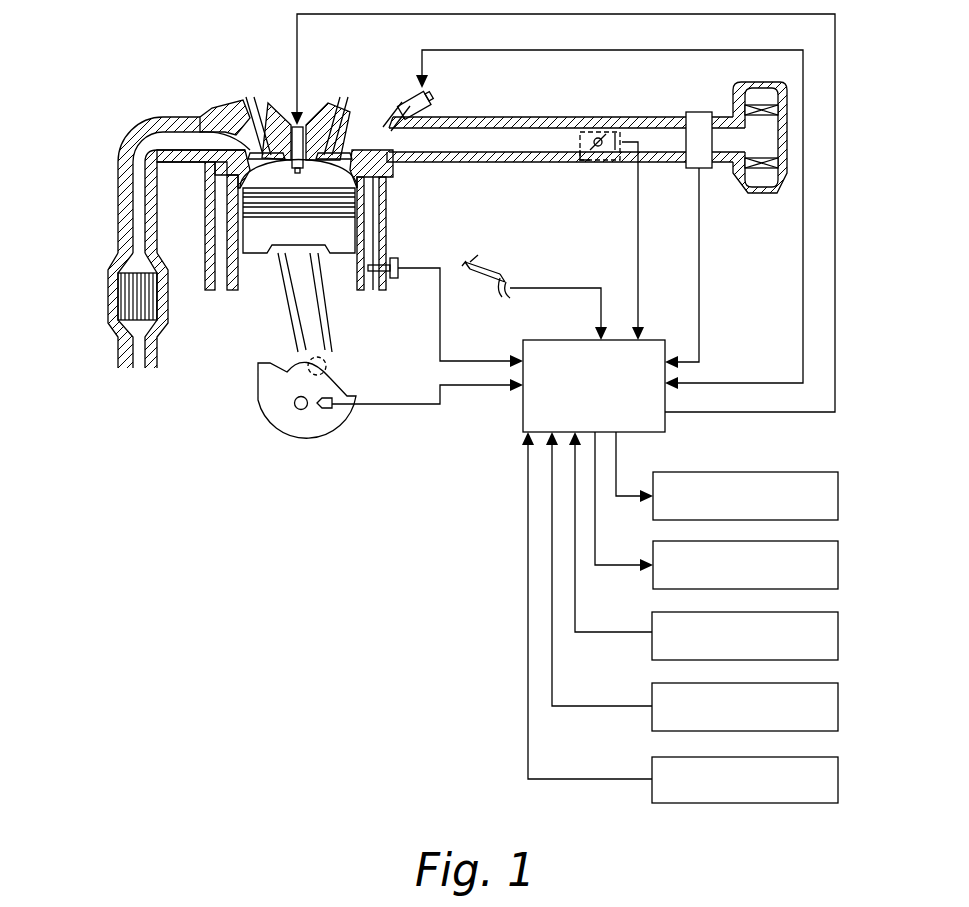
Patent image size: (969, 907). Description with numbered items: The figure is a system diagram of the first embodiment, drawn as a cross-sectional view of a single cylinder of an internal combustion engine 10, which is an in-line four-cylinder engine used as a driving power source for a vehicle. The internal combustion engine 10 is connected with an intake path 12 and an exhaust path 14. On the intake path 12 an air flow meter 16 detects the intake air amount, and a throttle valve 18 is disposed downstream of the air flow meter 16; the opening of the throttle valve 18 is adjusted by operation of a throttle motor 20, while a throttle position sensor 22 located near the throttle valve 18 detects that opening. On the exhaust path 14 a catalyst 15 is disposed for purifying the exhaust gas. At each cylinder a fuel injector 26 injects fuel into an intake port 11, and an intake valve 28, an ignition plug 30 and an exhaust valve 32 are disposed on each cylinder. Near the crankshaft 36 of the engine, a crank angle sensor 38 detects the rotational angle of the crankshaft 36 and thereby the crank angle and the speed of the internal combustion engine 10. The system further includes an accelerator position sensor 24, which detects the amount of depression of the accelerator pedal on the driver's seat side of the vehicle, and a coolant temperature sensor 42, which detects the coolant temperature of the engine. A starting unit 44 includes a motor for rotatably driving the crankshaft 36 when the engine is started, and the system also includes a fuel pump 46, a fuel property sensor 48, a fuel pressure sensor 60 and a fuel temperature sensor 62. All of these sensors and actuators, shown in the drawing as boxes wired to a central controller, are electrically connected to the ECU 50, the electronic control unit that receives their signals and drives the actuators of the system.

The internal combustion engine 10 is at (400, 226).
The intake port 11 is at (388, 140).
The intake path 12 is at (530, 112).
The exhaust path 14 is at (113, 160).
The catalyst 15 is at (125, 295).
The air flow meter 16 is at (696, 126).
The throttle valve 18 is at (600, 138).
The throttle motor 20 is at (572, 165).
The throttle position sensor 22 is at (616, 165).
The accelerator position sensor 24 is at (516, 275).
The fuel injector 26 is at (432, 99).
The intake valve 28 is at (365, 112).
The ignition plug 30 is at (320, 107).
The exhaust valve 32 is at (222, 128).
The crankshaft 36 is at (302, 411).
The crank angle sensor 38 is at (325, 410).
The coolant temperature sensor 42 is at (396, 280).
The starting unit 44 is at (822, 472).
The fuel pump 46 is at (822, 541).
The fuel property sensor 48 is at (822, 612).
The ECU 50 is at (522, 428).
The fuel pressure sensor 60 is at (822, 683).
The fuel temperature sensor 62 is at (822, 757).